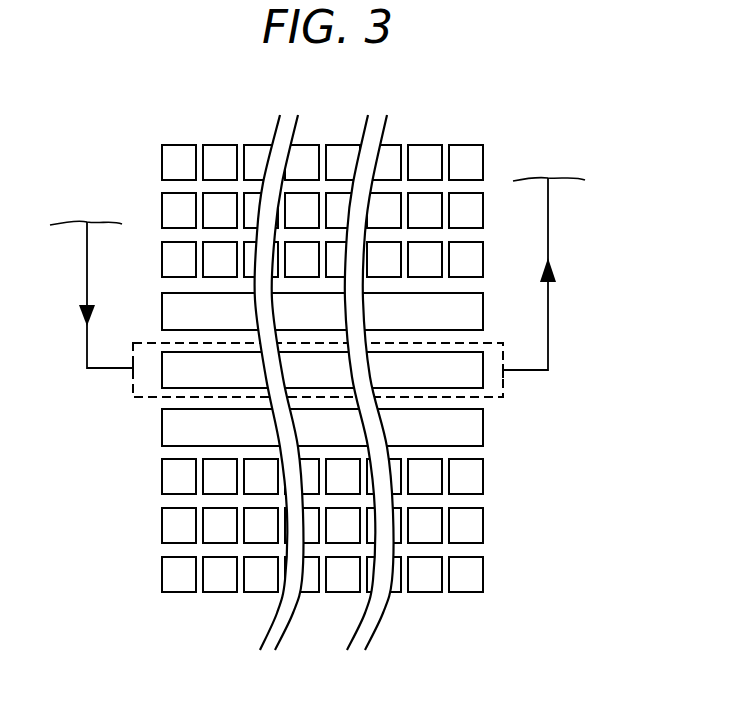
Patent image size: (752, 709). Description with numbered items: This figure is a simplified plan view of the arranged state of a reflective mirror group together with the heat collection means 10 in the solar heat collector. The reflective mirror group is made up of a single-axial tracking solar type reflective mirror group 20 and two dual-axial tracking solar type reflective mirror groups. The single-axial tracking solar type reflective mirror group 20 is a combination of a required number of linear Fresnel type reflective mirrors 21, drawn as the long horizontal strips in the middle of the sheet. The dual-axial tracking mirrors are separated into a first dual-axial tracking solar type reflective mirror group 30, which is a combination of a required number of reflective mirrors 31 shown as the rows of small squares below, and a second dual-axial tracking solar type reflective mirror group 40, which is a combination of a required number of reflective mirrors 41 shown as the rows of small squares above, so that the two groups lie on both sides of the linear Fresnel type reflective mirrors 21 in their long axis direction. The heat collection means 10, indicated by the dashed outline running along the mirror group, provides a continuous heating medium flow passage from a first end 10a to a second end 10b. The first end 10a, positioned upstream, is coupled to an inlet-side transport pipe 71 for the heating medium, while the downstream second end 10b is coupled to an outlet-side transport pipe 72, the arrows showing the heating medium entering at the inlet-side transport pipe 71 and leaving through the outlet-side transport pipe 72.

The heat collection means 10 is at (324, 405).
The first end 10a is at (130, 382).
The second end 10b is at (505, 350).
The single-axial tracking solar type reflective mirror group 20 is at (384, 369).
The linear Fresnel type reflective mirror 21 is at (482, 378).
The first dual-axial tracking solar type reflective mirror group 30 is at (320, 559).
The reflective mirror 31 is at (170, 574).
The second dual-axial tracking solar type reflective mirror group 40 is at (332, 181).
The reflective mirror 41 is at (170, 165).
The inlet-side transport pipe 71 is at (87, 345).
The outlet-side transport pipe 72 is at (548, 224).